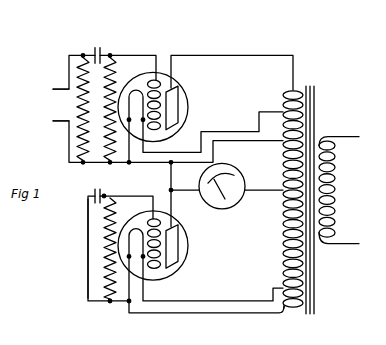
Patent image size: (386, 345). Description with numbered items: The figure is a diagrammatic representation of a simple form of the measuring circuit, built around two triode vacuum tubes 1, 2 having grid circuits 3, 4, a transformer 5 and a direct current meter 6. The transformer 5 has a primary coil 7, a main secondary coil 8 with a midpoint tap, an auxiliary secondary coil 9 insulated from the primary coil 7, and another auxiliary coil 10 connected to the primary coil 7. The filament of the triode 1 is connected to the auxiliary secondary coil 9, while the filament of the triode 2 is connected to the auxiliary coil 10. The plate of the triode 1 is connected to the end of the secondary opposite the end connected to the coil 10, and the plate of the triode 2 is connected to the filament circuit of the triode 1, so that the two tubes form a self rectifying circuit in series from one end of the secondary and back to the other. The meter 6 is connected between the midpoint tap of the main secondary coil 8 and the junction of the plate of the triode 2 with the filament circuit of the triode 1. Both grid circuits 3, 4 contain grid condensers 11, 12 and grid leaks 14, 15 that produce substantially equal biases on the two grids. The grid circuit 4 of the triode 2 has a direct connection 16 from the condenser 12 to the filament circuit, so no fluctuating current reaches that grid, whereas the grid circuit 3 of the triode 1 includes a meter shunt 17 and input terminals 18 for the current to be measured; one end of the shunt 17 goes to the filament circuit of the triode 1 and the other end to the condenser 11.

The triode vacuum tube 1 is at (187, 97).
The triode vacuum tube 2 is at (187, 243).
The grid circuit 3 is at (161, 91).
The grid circuit 4 is at (107, 237).
The transformer 5 is at (315, 203).
The direct current meter 6 is at (244, 178).
The primary coil 7 is at (336, 186).
The main secondary coil 8 is at (283, 219).
The auxiliary secondary coil 9 is at (282, 108).
The auxiliary coil 10 is at (281, 318).
The grid condenser 11 is at (104, 47).
The grid condenser 12 is at (104, 192).
The grid leak 14 is at (114, 80).
The grid leak 15 is at (113, 218).
The direct connection 16 is at (87, 229).
The meter shunt 17 is at (76, 108).
The input terminals 18 is at (58, 92).